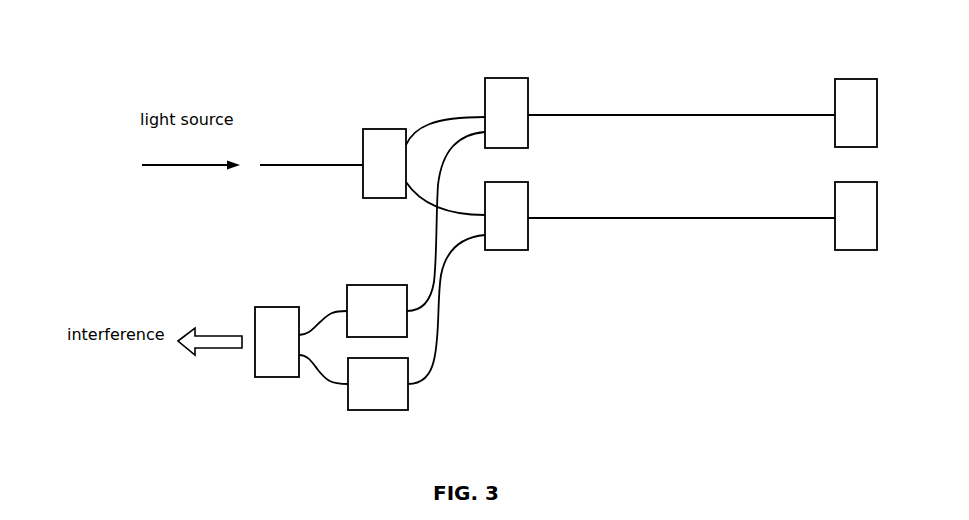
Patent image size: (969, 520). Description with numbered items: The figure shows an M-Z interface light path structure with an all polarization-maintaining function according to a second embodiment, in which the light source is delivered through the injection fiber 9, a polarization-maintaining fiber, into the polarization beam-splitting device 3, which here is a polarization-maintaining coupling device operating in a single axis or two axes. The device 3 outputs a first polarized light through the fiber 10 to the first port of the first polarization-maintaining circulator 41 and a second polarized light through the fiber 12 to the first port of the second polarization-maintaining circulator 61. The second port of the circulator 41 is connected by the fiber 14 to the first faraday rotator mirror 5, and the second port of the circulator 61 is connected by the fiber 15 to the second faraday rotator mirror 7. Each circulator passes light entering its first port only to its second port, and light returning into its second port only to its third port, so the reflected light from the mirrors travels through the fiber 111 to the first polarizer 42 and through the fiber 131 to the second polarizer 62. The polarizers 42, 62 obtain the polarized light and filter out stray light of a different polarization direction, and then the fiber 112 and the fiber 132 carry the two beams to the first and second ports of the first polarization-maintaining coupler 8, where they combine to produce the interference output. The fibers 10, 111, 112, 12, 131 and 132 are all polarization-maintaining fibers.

The polarization beam-splitting device 3 is at (384, 163).
The first faraday rotator mirror 5 is at (856, 113).
The second faraday rotator mirror 7 is at (856, 216).
The first polarization-maintaining coupler 8 is at (277, 342).
The injection fiber 9 is at (311, 146).
The fiber between the polarization beam-splitting device and the first polarization- 10 is at (425, 113).
The fiber between the polarization beam-splitting device and the second polarization 12 is at (425, 217).
The fiber between the first polarization-maintaining-transferring device and the fir 14 is at (657, 104).
The fiber between the second polarization-maintaining-transferring device and the se 15 is at (658, 233).
The first polarization-maintaining circulator 41 is at (506, 113).
The first polarizer 42 is at (377, 311).
The second polarization-maintaining circulator 61 is at (506, 216).
The second polarizer 62 is at (378, 384).
The fiber between the first polarization-maintaining circulator and the first polari 111 is at (455, 140).
The fiber between the first polarization-maintaining coupler and the first polarizer 112 is at (323, 307).
The fiber between the second polarization-maintaining circulator and the second pola 131 is at (470, 247).
The fiber between the first polarization-maintaining coupler and the second polarize 132 is at (312, 372).